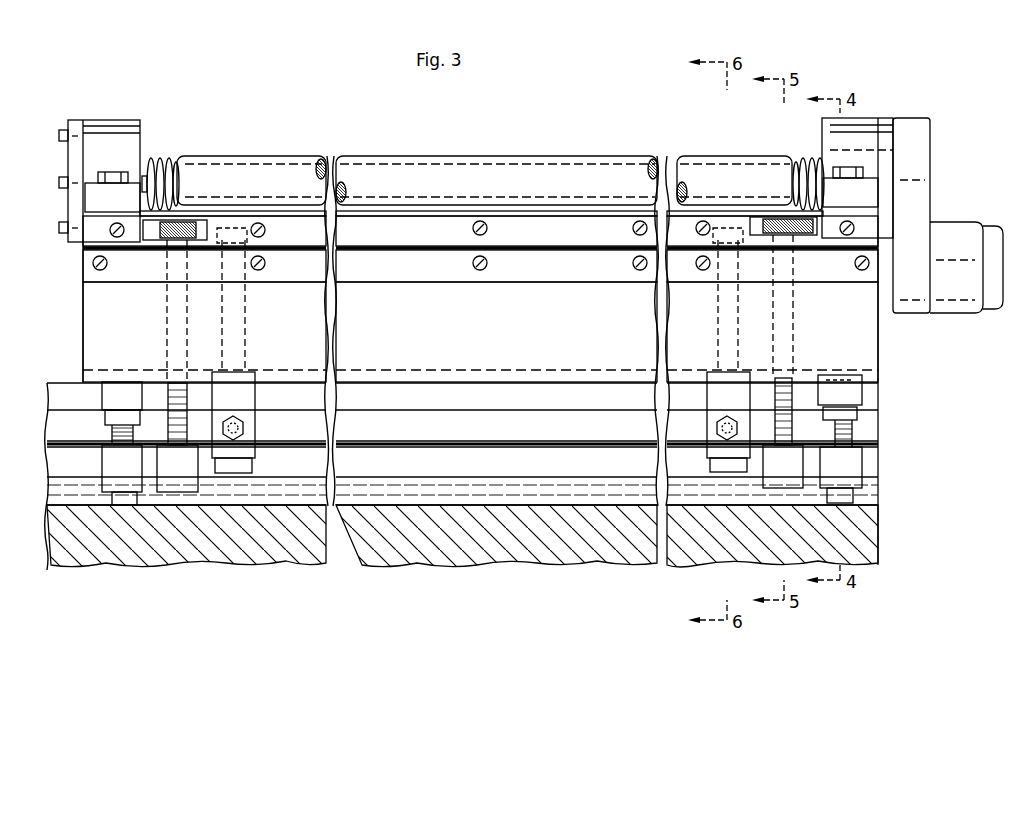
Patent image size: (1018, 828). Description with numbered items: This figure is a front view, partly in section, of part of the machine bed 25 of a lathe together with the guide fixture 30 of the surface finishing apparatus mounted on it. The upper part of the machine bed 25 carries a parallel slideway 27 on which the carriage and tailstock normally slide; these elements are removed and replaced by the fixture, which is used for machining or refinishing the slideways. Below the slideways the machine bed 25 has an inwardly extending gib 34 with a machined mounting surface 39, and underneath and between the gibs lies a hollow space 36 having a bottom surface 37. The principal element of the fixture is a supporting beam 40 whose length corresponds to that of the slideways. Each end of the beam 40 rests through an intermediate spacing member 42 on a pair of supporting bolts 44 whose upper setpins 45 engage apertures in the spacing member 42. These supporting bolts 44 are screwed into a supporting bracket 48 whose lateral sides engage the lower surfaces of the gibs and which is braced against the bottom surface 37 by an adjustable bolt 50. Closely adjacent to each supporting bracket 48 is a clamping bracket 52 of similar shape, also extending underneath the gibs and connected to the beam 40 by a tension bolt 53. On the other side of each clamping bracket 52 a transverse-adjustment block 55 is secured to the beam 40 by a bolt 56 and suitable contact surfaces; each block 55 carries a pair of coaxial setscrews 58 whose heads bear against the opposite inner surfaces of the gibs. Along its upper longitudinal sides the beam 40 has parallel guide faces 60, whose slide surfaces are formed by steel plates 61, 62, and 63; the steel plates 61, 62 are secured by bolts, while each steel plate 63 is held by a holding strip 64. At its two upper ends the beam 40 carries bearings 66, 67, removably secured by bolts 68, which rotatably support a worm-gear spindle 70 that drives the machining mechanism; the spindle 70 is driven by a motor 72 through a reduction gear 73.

The machine bed 25 is at (860, 535).
The slideway 27 is at (866, 393).
The guide fixture 30 is at (548, 150).
The gib 34 is at (870, 423).
The hollow space 36 is at (870, 461).
The bottom surface 37 is at (582, 515).
The mounting surface 39 is at (556, 447).
The supporting beam 40 is at (860, 329).
The spacing member 42 is at (844, 377).
The supporting bolt 44 is at (860, 436).
The setpin 45 is at (830, 375).
The supporting bracket 48 is at (854, 467).
The adjustable bolt 50 is at (852, 497).
The clamping bracket 52 is at (770, 478).
The tension bolt 53 is at (793, 428).
The transverse-adjustment block 55 is at (713, 416).
The bolt 56 is at (724, 343).
The setscrew 58 is at (720, 440).
The guide face 60 is at (553, 234).
The steel plate 61 is at (501, 212).
The steel plate 62 is at (517, 235).
The steel plate 63 is at (457, 252).
The holding strip 64 is at (405, 266).
The bearing 66 is at (115, 132).
The bearing 67 is at (853, 130).
The bolt 68 is at (120, 174).
The worm-gear spindle 70 is at (630, 158).
The motor 72 is at (960, 234).
The reduction gear 73 is at (918, 166).